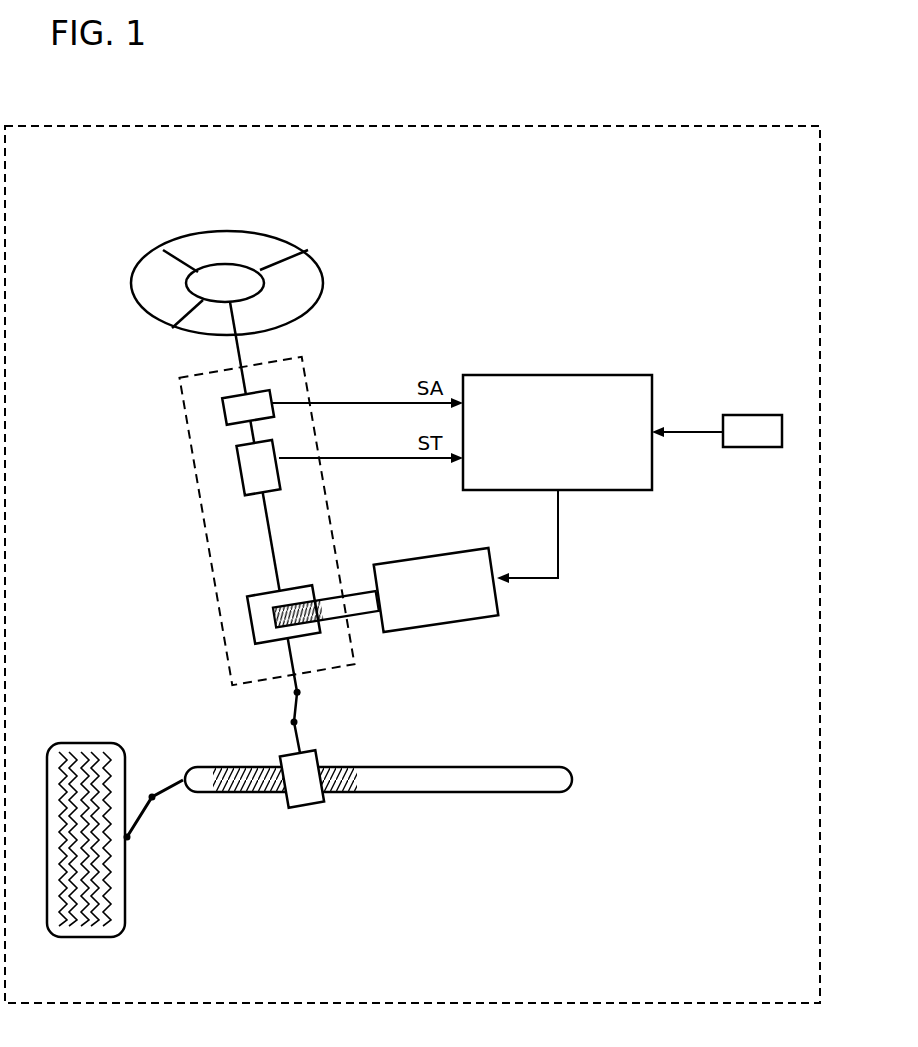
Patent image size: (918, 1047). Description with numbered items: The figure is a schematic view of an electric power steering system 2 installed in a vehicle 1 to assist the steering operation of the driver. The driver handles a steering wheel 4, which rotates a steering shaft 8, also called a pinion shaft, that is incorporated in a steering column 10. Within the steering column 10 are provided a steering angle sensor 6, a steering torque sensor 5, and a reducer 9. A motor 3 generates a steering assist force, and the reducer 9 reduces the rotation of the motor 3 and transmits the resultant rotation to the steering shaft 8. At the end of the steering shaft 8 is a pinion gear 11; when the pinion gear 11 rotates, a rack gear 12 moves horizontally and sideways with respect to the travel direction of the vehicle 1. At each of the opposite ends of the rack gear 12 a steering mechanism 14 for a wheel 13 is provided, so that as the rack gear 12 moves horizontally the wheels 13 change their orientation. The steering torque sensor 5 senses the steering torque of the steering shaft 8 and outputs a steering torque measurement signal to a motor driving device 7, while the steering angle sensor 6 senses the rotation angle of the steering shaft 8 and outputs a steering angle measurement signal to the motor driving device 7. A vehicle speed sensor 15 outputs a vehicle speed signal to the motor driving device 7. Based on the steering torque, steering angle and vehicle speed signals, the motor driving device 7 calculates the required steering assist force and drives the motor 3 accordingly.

The vehicle 1 is at (541, 126).
The electric power steering system 2 is at (664, 220).
The motor 3 is at (500, 607).
The steering wheel 4 is at (323, 270).
The steering torque sensor 5 is at (240, 474).
The steering angle sensor 6 is at (223, 411).
The motor driving device 7 is at (588, 375).
The steering shaft 8 is at (270, 543).
The reducer 9 is at (250, 617).
The steering column 10 is at (307, 373).
The pinion gear 11 is at (300, 807).
The rack gear 12 is at (423, 767).
The wheel 13 is at (87, 743).
The steering mechanism 14 is at (188, 797).
The vehicle speed sensor 15 is at (752, 415).